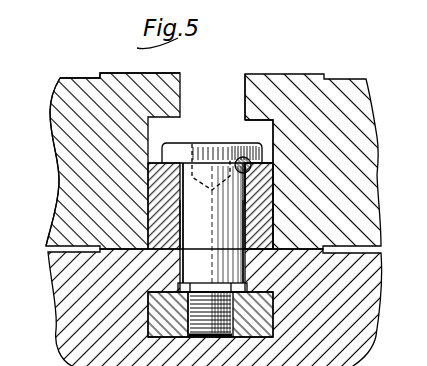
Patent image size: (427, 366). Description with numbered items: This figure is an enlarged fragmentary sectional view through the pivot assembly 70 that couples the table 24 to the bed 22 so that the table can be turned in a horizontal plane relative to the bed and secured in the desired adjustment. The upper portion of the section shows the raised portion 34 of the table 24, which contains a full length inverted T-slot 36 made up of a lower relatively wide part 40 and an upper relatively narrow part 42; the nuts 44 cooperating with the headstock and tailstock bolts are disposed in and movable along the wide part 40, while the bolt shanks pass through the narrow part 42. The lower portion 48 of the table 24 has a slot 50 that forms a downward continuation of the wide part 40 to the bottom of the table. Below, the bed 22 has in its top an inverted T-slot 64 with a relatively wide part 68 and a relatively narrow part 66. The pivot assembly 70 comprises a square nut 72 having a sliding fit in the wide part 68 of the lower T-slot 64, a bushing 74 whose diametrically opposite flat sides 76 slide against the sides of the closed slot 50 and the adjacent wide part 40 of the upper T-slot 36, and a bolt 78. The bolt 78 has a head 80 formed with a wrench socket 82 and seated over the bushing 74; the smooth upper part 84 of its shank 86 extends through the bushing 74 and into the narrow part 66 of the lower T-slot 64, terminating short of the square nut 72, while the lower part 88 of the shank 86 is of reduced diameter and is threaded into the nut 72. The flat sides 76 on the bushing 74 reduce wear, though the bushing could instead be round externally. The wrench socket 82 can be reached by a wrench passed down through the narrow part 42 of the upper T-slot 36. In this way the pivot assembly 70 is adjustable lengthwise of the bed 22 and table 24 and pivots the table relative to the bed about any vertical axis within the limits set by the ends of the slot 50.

The bed 22 is at (49, 318).
The table 24 is at (53, 182).
The raised portion 34 is at (58, 92).
The inverted T-slot 36 is at (260, 115).
The relatively wide part 40 is at (274, 150).
The relatively narrow part 42 is at (243, 91).
The nuts 44 is at (276, 132).
The lower portion 48 is at (55, 216).
The slot 50 is at (269, 205).
The inverted T-slot 64 is at (248, 284).
The relatively narrow part 66 is at (236, 264).
The relatively wide part 68 is at (270, 326).
The pivot assembly 70 is at (153, 133).
The square nut 72 is at (274, 312).
The bushing 74 is at (266, 224).
The flat sides 76 is at (148, 195).
The bolt 78 is at (178, 138).
The head 80 is at (250, 140).
The wrench socket 82 is at (197, 140).
The smooth upper part 84 is at (185, 206).
The shank 86 is at (173, 231).
The lower part 88 is at (186, 320).